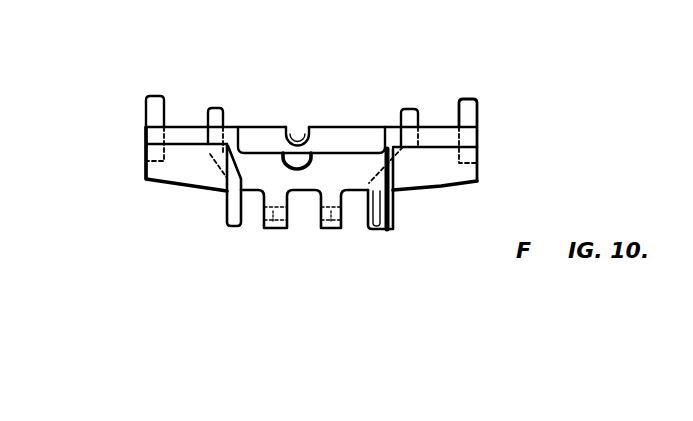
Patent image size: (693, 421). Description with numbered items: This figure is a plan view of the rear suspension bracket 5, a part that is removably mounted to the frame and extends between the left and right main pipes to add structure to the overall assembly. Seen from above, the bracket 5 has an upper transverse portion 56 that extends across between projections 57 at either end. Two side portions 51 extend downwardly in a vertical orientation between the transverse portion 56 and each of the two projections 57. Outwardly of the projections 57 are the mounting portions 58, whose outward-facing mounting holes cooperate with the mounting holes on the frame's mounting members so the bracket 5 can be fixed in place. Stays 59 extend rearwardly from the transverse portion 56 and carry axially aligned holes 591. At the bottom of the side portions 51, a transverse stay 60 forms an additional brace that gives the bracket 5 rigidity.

The rear suspension bracket 5 is at (314, 182).
The side portions 51 is at (232, 221).
The upper transverse portion 56 is at (324, 167).
The projections 57 is at (185, 170).
The mounting portions 58 is at (153, 118).
The stays 59 is at (326, 249).
The axially aligned holes 591 is at (326, 257).
The transverse stay 60 is at (260, 133).